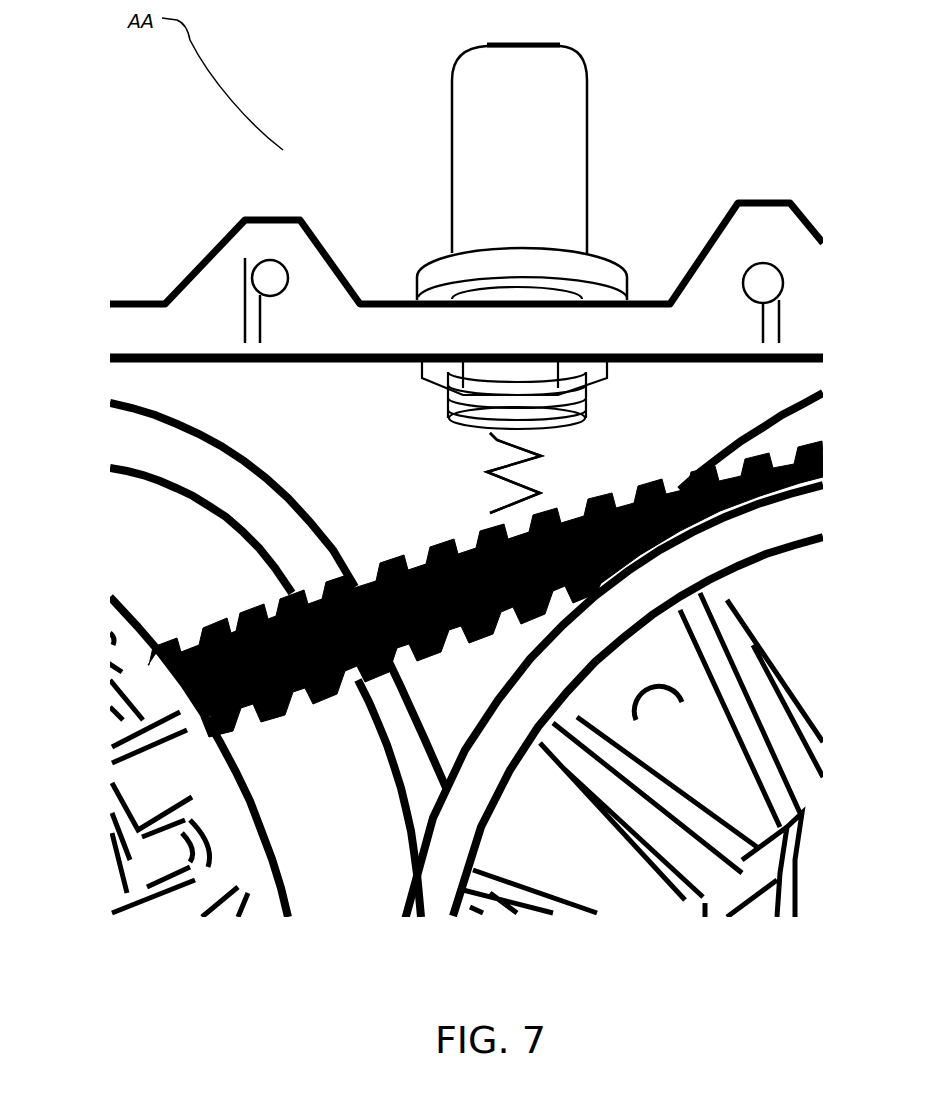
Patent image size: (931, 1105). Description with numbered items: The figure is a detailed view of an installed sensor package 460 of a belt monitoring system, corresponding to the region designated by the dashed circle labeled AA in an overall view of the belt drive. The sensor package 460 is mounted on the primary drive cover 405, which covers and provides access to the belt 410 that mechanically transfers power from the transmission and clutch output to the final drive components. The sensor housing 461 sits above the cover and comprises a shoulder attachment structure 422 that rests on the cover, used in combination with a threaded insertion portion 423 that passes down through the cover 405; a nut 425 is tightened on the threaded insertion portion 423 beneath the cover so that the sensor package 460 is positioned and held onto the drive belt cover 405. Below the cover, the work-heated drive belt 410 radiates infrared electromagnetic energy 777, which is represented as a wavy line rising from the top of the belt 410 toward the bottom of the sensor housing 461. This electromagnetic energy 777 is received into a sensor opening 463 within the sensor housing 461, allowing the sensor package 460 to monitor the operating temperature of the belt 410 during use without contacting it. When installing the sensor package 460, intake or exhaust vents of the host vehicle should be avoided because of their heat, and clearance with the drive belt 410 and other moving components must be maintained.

The sensor package 460 is at (632, 193).
The sensor housing 461 is at (495, 165).
The shoulder attachment structure 422 is at (441, 268).
The primary drive cover 405 is at (735, 249).
The nut 425 is at (597, 378).
The threaded insertion portion 423 is at (587, 403).
The sensor opening 463 is at (487, 433).
The electromagnetic energy 777 is at (487, 470).
The belt 410 is at (760, 453).